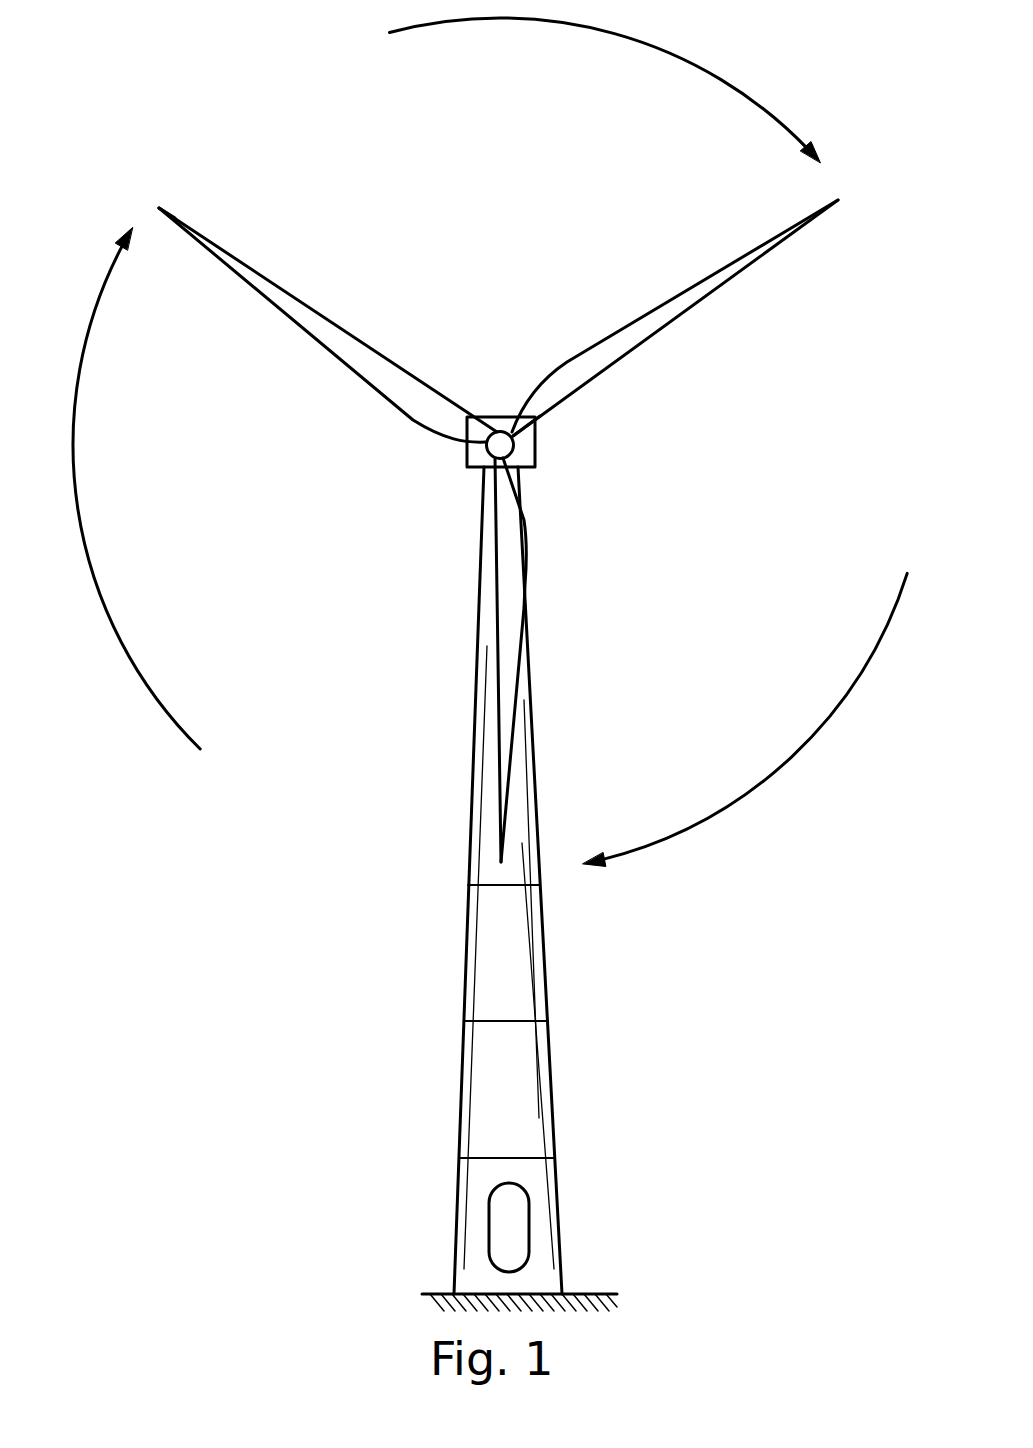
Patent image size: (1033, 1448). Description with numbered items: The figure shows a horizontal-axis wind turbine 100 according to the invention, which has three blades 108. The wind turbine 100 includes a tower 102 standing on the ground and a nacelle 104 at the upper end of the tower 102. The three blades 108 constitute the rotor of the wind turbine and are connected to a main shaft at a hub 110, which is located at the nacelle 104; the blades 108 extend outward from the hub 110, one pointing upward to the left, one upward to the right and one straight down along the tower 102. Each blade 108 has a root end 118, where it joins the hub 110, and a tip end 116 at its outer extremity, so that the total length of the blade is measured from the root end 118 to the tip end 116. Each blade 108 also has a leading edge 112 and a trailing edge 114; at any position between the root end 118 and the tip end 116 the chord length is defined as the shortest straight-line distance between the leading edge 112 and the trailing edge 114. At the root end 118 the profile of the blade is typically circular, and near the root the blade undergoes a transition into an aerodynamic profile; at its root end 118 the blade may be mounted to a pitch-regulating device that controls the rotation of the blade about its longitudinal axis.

The horizontal-axis wind turbine 100 is at (451, 729).
The tower 102 is at (495, 953).
The nacelle 104 is at (476, 468).
The blade 108 is at (451, 504).
The hub 110 is at (500, 440).
The leading edge 112 is at (283, 285).
The trailing edge 114 is at (273, 307).
The tip end 116 is at (158, 207).
The root end 118 is at (513, 436).